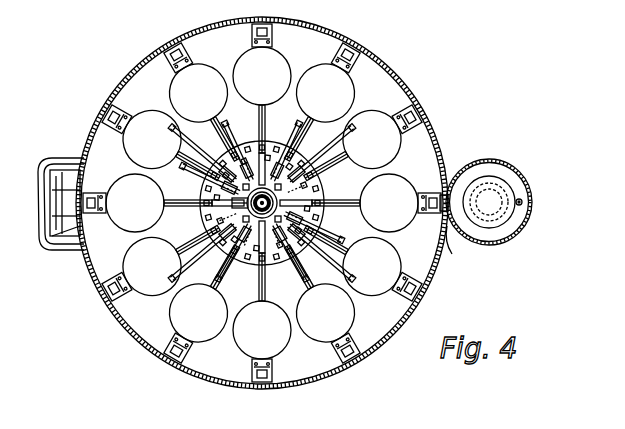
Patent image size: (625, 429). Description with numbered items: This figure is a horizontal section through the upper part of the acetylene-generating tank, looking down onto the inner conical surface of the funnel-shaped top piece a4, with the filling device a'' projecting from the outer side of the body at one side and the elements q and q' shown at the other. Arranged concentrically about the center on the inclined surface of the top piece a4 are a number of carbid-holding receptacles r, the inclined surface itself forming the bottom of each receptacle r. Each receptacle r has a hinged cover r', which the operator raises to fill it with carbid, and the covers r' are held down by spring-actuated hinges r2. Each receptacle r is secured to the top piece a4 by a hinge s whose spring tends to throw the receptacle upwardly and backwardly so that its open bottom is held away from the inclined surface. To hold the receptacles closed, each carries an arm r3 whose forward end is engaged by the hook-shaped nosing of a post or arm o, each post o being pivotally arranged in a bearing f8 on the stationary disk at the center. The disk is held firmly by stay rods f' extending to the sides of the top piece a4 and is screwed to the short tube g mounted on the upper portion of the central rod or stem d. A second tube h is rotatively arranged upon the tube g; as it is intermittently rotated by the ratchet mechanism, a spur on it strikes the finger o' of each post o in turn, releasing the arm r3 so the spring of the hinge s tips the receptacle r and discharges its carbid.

The funnel-shaped top piece a4 is at (394, 72).
The filling device a'' is at (45, 204).
The hinged cover r' is at (262, 203).
The stay bolts or rods f' is at (282, 237).
The spring-actuated hinges r2 is at (282, 52).
The hinge s is at (348, 44).
The arm r3 is at (267, 120).
The bearing f8 is at (330, 186).
The arm or post o is at (262, 204).
The finger o' is at (262, 201).
The rod or stem d is at (280, 206).
The second tube or pipe h is at (267, 203).
The short tube or pipe g is at (245, 221).
The wheel q is at (501, 202).
The wheel support q' is at (454, 251).
The carbid-holding receptacles r is at (174, 110).